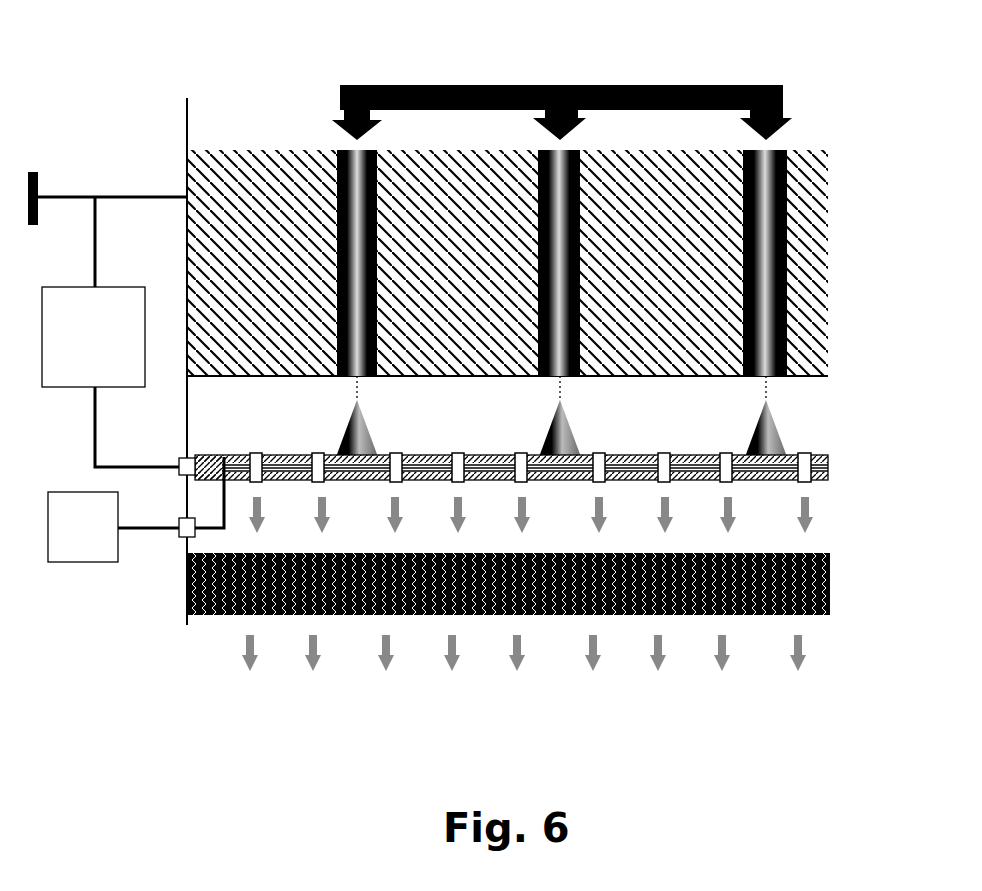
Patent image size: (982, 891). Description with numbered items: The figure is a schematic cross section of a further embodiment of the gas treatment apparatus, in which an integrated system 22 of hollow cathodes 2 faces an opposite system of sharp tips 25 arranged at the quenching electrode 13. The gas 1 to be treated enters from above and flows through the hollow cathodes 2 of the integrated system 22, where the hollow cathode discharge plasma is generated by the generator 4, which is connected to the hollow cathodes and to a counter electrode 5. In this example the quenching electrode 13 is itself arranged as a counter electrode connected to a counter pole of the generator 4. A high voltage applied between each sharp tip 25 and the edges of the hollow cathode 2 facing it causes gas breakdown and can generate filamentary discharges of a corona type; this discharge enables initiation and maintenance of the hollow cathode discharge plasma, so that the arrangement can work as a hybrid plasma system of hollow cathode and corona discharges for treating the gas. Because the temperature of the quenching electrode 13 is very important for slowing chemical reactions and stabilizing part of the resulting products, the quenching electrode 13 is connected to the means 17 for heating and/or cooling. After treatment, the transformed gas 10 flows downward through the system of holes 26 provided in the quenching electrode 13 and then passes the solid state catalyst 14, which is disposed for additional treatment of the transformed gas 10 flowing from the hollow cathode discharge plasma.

The gas 1 is at (478, 84).
The hollow cathode 2 is at (765, 200).
The generator 4 is at (70, 373).
The counter electrode 5 is at (187, 148).
The transformed gas 10 is at (520, 650).
The quenching electrode 13 is at (292, 478).
The solid state catalyst 14 is at (808, 605).
The means for heating and/or cooling 17 is at (95, 553).
The integrated system of hollow cathodes 22 is at (272, 173).
The sharp tips 25 is at (760, 432).
The holes 26 is at (520, 453).